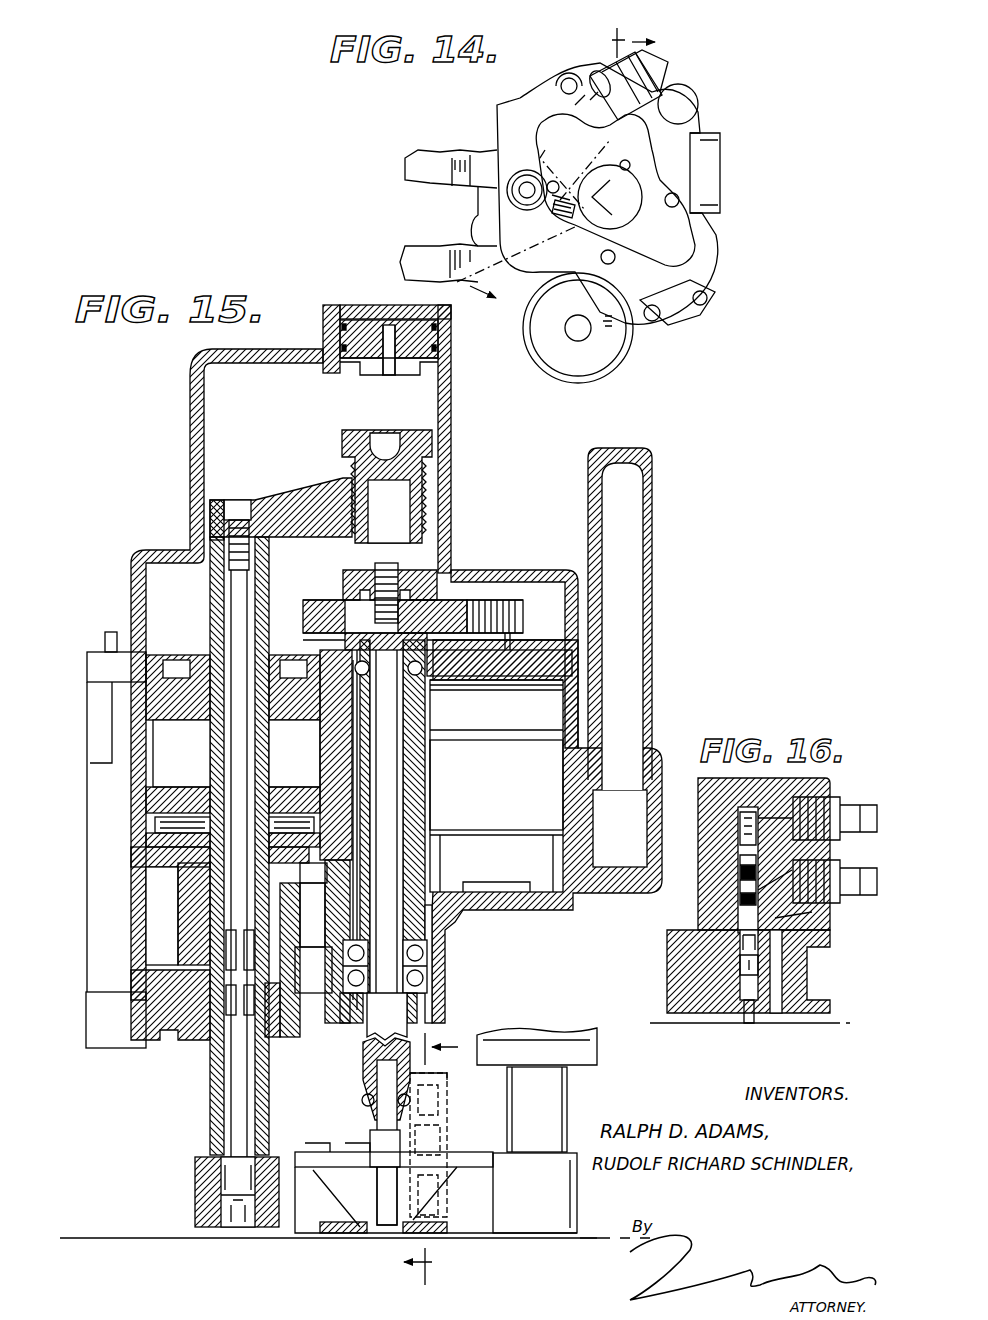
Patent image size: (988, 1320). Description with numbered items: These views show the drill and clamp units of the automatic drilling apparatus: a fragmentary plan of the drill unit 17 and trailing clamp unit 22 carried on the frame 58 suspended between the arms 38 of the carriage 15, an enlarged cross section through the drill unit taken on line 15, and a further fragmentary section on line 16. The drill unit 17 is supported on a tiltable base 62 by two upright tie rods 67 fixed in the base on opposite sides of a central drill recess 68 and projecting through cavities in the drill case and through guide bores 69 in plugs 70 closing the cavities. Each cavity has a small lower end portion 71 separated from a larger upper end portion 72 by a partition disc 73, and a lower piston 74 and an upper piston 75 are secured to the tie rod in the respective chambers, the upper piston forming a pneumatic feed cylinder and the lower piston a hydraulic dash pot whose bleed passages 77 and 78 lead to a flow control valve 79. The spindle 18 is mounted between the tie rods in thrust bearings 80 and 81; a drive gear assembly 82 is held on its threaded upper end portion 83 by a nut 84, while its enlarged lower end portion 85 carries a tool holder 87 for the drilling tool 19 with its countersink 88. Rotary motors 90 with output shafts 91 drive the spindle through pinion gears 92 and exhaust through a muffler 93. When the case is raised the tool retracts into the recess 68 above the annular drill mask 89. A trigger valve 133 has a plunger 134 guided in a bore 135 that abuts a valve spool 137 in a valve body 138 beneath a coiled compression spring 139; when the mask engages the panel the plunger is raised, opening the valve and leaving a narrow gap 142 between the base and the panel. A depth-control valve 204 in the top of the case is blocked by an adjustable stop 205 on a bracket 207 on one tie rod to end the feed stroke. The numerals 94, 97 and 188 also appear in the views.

In FIG. 14, the carriage 15 is at (579, 175).
In FIG. 15, the section line 16— 16 is at (426, 1156).
In FIG. 14, the drill unit 17 is at (724, 240).
In FIG. 15, the drill unit 17 is at (175, 525).
In FIG. 15, the spindle 18 is at (390, 792).
In FIG. 15, the drilling tool 19 is at (378, 1192).
In FIG. 14, the clamp unit 22 is at (606, 345).
In FIG. 14, the arms 38 is at (716, 175).
In FIG. 14, the frame 58 is at (464, 148).
In FIG. 15, the tiltable base 62 is at (582, 1213).
In FIG. 16, the tiltable base 62 is at (812, 985).
In FIG. 15, the tie rods 67 is at (210, 1124).
In FIG. 15, the drill recess 68 is at (338, 1183).
In FIG. 15, the guide bores 69 is at (209, 630).
In FIG. 15, the plugs 70 is at (190, 712).
In FIG. 15, the lower end portion 71 is at (195, 905).
In FIG. 15, the upper end portion 72 is at (314, 754).
In FIG. 15, the partition disc 73 is at (145, 850).
In FIG. 15, the lower piston 74 is at (185, 988).
In FIG. 15, the upper piston 75 is at (296, 800).
In FIG. 15, the bleed passage 77 is at (300, 882).
In FIG. 15, the bleed passage 78 is at (260, 988).
In FIG. 15, the flow control valve 79 is at (292, 920).
In FIG. 15, the lower thrust bearings 80 is at (428, 978).
In FIG. 15, the upper bearing 81 is at (443, 678).
In FIG. 15, the drive gear assembly 82 is at (462, 582).
In FIG. 15, the threaded upper end portion 83 is at (396, 576).
In FIG. 15, the nut 84 is at (346, 582).
In FIG. 15, the enlarged lower end portion 85 is at (370, 1030).
In FIG. 15, the tool holder 87 is at (356, 1100).
In FIG. 15, the countersink 88 is at (410, 1160).
In FIG. 15, the drill mask 89 is at (350, 1236).
In FIG. 15, the rotary motors 90 is at (504, 800).
In FIG. 15, the output shafts 91 is at (512, 645).
In FIG. 15, the pinion gears 92 is at (516, 614).
In FIG. 15, the muffler 93 is at (653, 588).
In FIG. 14, the section plane 94 is at (478, 276).
In FIG. 14, the lower bracket arm 97 is at (450, 230).
In FIG. 15, the trigger valve 133 is at (448, 1108).
In FIG. 16, the trigger valve 133 is at (812, 915).
In FIG. 16, the plunger 134 is at (752, 1030).
In FIG. 16, the bore 135 is at (738, 942).
In FIG. 16, the valve spool 137 is at (737, 906).
In FIG. 16, the valve body 138 is at (740, 792).
In FIG. 16, the coiled compression spring 139 is at (738, 850).
In FIG. 15, the gap 142 is at (590, 1240).
In FIG. 15, the valve cap 188 is at (447, 1083).
In FIG. 15, the depth-control valve 204 is at (393, 372).
In FIG. 15, the adjustable stop 205 is at (420, 430).
In FIG. 15, the bracket 207 is at (308, 500).